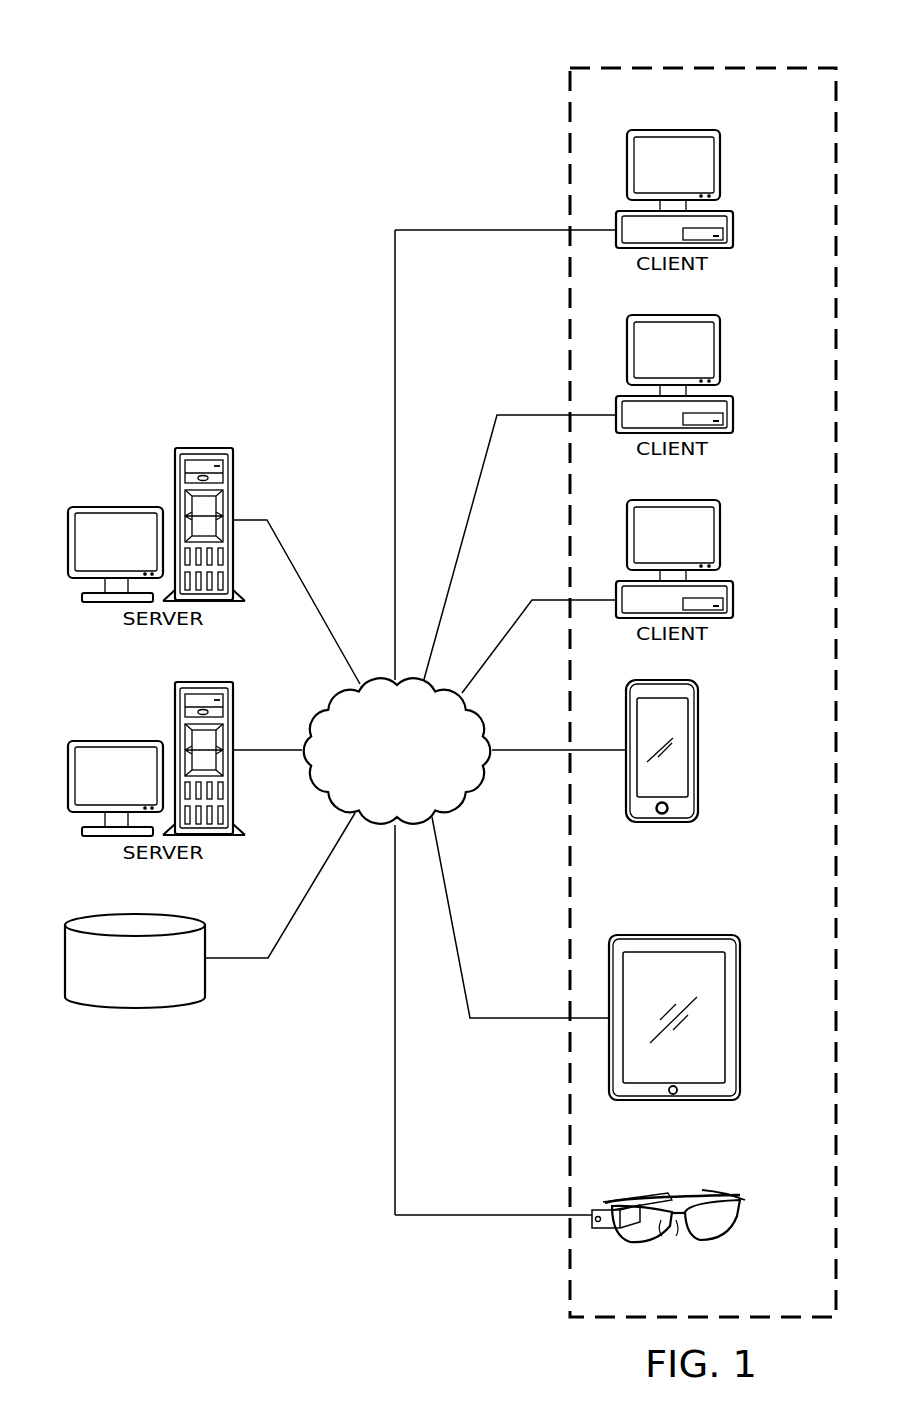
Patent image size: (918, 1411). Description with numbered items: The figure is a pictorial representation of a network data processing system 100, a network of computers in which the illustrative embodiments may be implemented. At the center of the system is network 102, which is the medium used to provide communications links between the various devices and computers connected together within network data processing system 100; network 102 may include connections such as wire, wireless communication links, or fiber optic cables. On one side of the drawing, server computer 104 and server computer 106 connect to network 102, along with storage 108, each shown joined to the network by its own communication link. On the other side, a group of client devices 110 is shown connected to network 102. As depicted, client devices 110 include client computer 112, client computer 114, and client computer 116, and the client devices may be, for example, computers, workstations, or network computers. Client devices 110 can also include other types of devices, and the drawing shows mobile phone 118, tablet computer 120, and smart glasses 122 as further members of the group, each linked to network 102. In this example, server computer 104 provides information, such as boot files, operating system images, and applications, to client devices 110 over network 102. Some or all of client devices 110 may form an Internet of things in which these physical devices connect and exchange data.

The network data processing system 100 is at (256, 316).
The network 102 is at (373, 783).
The server computer 104 is at (117, 507).
The server computer 106 is at (117, 738).
The storage 108 is at (133, 1008).
The client devices 110 is at (750, 63).
The client computer 112 is at (722, 165).
The client computer 114 is at (722, 350).
The client computer 116 is at (722, 535).
The mobile phone 118 is at (698, 768).
The tablet computer 120 is at (740, 1028).
The smart glasses 122 is at (742, 1207).